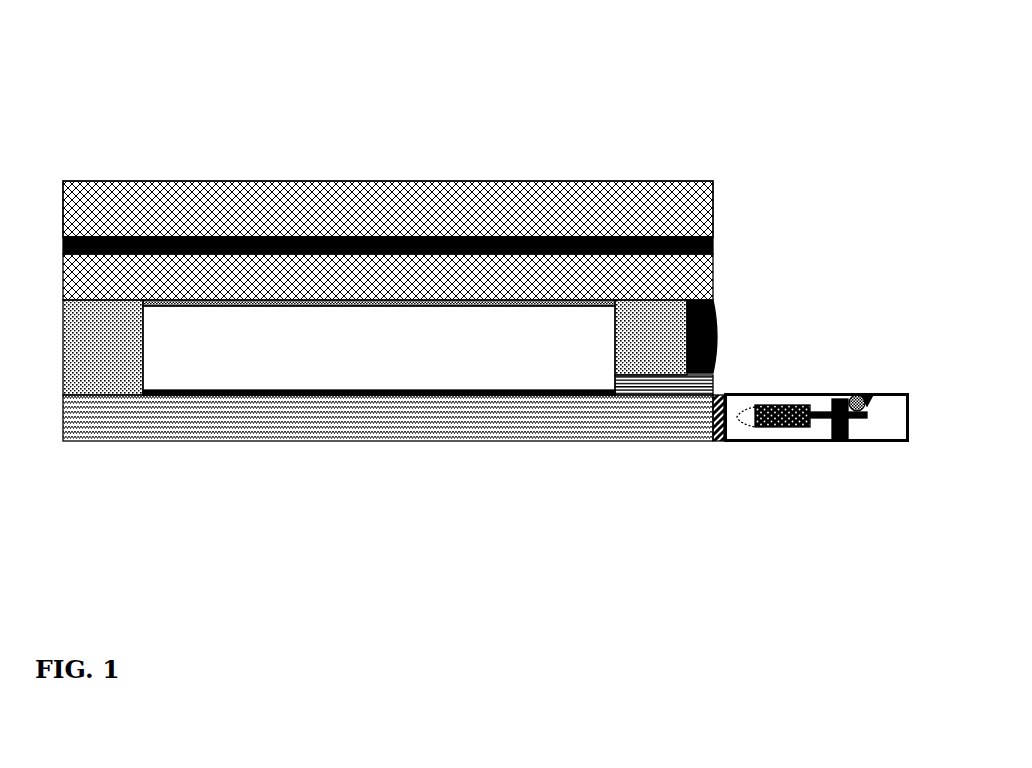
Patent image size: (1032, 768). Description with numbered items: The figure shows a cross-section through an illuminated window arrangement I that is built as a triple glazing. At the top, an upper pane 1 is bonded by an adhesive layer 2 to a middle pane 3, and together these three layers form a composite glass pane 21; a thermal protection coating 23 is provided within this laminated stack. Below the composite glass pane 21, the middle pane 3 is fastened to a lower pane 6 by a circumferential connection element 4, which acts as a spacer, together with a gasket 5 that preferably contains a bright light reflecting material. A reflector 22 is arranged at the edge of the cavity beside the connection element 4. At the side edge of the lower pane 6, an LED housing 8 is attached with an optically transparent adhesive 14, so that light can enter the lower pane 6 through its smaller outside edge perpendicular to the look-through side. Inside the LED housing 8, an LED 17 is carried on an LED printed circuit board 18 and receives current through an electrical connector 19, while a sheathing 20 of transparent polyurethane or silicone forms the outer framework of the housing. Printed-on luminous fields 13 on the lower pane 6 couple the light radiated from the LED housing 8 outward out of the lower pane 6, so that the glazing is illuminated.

The window arrangement I is at (467, 89).
The upper pane 1 is at (720, 192).
The adhesive layer 2 is at (715, 247).
The middle pane 3 is at (715, 277).
The circumferential connection element 4 is at (146, 343).
The gasket 5 is at (729, 330).
The lower pane 6 is at (404, 449).
The LED housing 8 is at (803, 451).
The luminous fields 13 is at (344, 389).
The optically transparent adhesive 14 is at (720, 452).
The LED 17 is at (796, 400).
The LED printed circuit board 18 is at (855, 427).
The electrical connector 19 is at (869, 396).
The sheathing 20 is at (785, 445).
The composite glass pane 21 is at (601, 191).
The reflector 22 is at (609, 380).
The thermal protection coating 23 is at (399, 258).